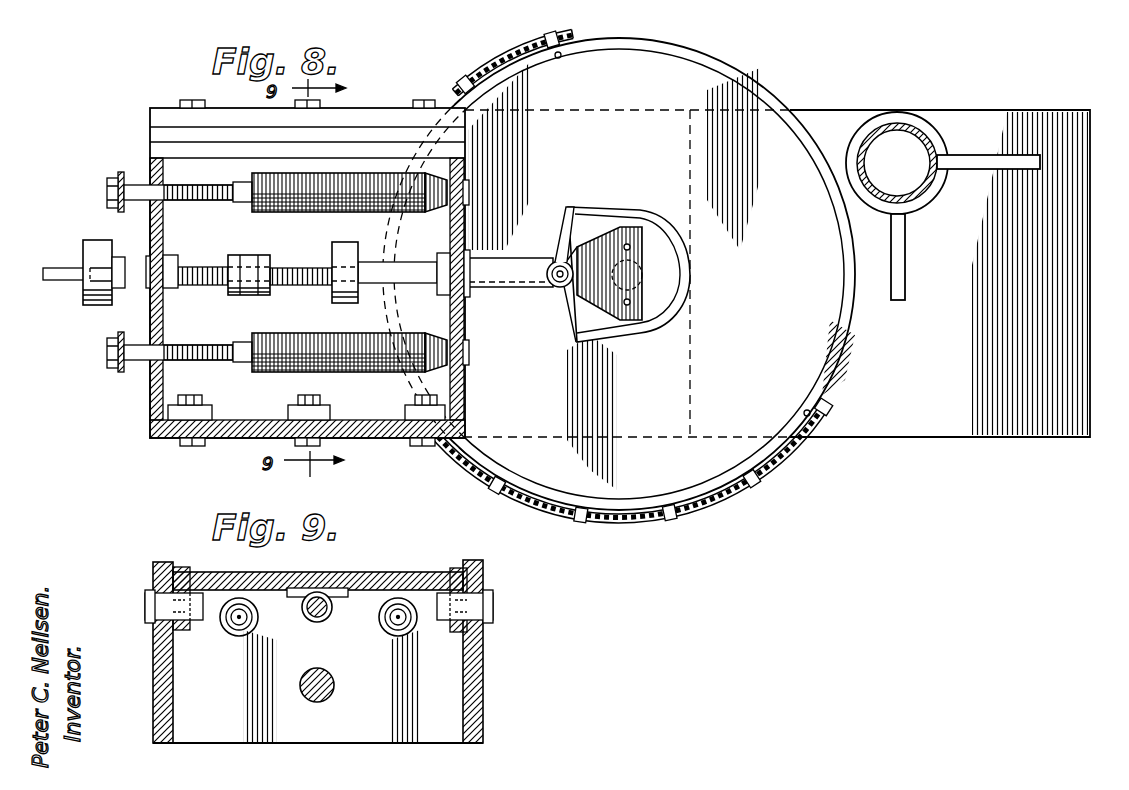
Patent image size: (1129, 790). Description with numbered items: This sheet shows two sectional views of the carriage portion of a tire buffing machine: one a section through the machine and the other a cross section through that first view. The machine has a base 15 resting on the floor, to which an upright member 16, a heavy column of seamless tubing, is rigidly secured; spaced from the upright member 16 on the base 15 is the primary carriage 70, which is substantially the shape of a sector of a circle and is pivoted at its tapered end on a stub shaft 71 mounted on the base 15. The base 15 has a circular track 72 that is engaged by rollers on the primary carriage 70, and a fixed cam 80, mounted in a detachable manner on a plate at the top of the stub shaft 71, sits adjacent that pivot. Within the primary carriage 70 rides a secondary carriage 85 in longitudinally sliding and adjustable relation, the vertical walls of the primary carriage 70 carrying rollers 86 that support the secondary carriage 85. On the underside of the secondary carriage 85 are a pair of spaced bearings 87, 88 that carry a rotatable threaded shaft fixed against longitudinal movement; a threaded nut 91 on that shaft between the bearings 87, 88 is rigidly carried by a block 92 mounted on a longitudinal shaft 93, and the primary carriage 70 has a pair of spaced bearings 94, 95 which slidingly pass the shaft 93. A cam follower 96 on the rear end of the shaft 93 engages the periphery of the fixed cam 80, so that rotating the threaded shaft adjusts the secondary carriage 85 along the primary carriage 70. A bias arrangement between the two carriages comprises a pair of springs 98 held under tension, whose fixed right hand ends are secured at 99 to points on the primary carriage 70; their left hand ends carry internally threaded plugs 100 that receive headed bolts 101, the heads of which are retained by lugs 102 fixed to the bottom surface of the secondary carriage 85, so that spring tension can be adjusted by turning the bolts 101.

In FIG. 8, the base 15 is at (1047, 110).
In FIG. 8, the upright member 16 is at (915, 127).
In FIG. 8, the primary carriage 70 is at (234, 437).
In FIG. 9, the primary carriage 70 is at (485, 653).
In FIG. 8, the stub shaft 71 is at (657, 306).
In FIG. 8, the circular track 72 is at (703, 490).
In FIG. 8, the fixed cam 80 is at (590, 307).
In FIG. 9, the secondary carriage 85 is at (383, 572).
In FIG. 8, the rollers 86 is at (403, 412).
In FIG. 9, the rollers 86 is at (177, 630).
In FIG. 8, the bearing 87 is at (82, 250).
In FIG. 8, the bearing 88 is at (376, 218).
In FIG. 9, the bearing 88 is at (332, 608).
In FIG. 8, the threaded nut 91 is at (250, 258).
In FIG. 8, the block 92 is at (242, 296).
In FIG. 8, the longitudinal shaft 93 is at (407, 265).
In FIG. 9, the longitudinal shaft 93 is at (334, 692).
In FIG. 8, the bearing 94 is at (170, 262).
In FIG. 8, the bearing 95 is at (447, 292).
In FIG. 8, the cam follower 96 is at (571, 245).
In FIG. 8, the springs 98 is at (290, 214).
In FIG. 9, the springs 98 is at (241, 636).
In FIG. 8, the fixed ends of springs 99 is at (467, 218).
In FIG. 8, the internally threaded plugs 100 is at (240, 202).
In FIG. 8, the headed bolts 101 is at (190, 200).
In FIG. 8, the lugs 102 is at (118, 175).